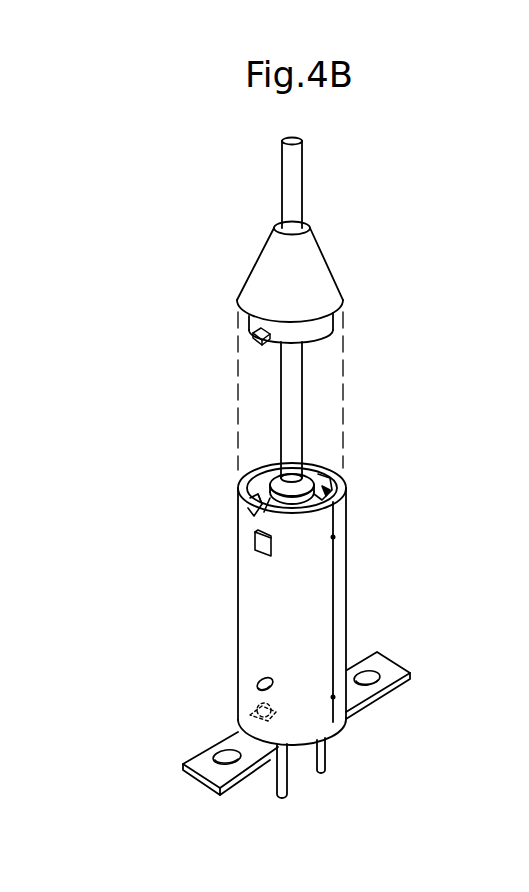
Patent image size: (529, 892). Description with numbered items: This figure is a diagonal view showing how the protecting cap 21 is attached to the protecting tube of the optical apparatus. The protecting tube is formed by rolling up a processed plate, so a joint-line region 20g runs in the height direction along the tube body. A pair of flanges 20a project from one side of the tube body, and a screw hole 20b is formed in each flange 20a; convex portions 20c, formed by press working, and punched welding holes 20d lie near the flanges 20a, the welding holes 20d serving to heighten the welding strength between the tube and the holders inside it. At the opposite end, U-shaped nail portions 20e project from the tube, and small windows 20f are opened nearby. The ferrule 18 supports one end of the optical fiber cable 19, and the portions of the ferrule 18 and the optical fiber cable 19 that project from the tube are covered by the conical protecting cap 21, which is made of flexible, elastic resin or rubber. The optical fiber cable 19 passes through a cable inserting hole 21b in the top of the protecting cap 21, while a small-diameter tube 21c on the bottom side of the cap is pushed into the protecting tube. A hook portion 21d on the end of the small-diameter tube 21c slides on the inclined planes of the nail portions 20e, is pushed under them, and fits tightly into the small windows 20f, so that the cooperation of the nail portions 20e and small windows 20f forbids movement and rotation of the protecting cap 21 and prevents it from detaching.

The ferrule 18 is at (262, 490).
The optical fiber cable 19 is at (297, 198).
The flanges 20a is at (394, 668).
The screw hole 20b is at (385, 686).
The convex portions 20c is at (275, 720).
The welding holes 20d is at (255, 685).
The nail portions 20e is at (328, 466).
The small windows 20f is at (254, 547).
The joint-line region 20g is at (335, 582).
The protecting cap 21 is at (313, 280).
The cable inserting hole 21b is at (273, 224).
The small-diameter tube 21c is at (313, 333).
The hook portion 21d is at (252, 334).